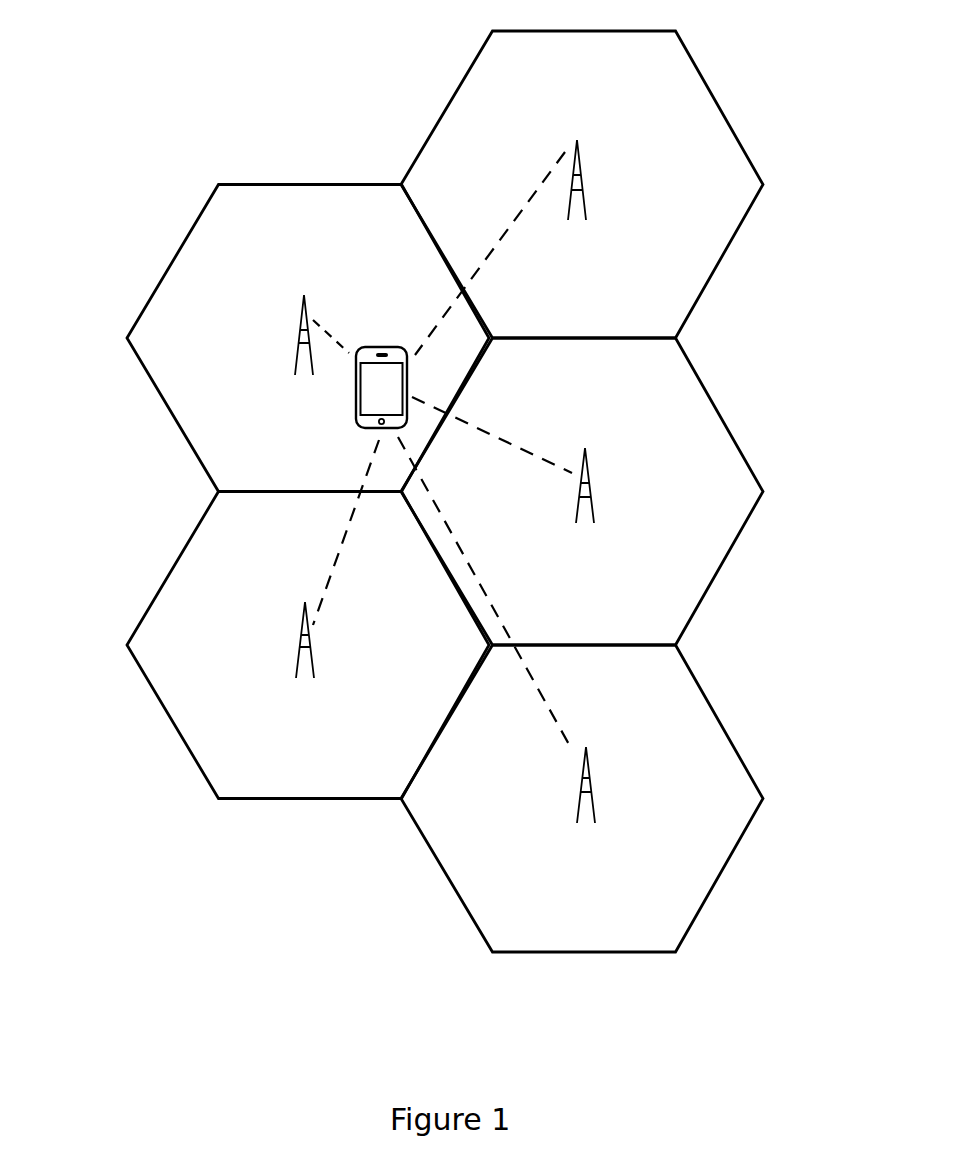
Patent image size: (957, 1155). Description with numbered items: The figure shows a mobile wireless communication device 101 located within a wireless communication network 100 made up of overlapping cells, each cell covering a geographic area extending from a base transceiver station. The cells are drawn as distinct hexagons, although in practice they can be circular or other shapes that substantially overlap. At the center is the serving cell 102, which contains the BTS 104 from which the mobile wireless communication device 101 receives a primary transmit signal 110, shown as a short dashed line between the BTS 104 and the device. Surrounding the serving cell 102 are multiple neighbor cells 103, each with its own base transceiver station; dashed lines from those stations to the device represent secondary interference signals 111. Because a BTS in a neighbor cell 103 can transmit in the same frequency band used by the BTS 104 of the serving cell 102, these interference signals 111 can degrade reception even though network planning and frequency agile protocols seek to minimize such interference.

The wireless communication network 100 is at (123, 72).
The mobile wireless communication device 101 is at (355, 392).
The serving cell 102 is at (202, 208).
The neighbor cell 103 is at (723, 723).
The base transceiver station 104 is at (313, 302).
The primary transmit signal 110 is at (332, 335).
The secondary interference signal 111 is at (492, 257).